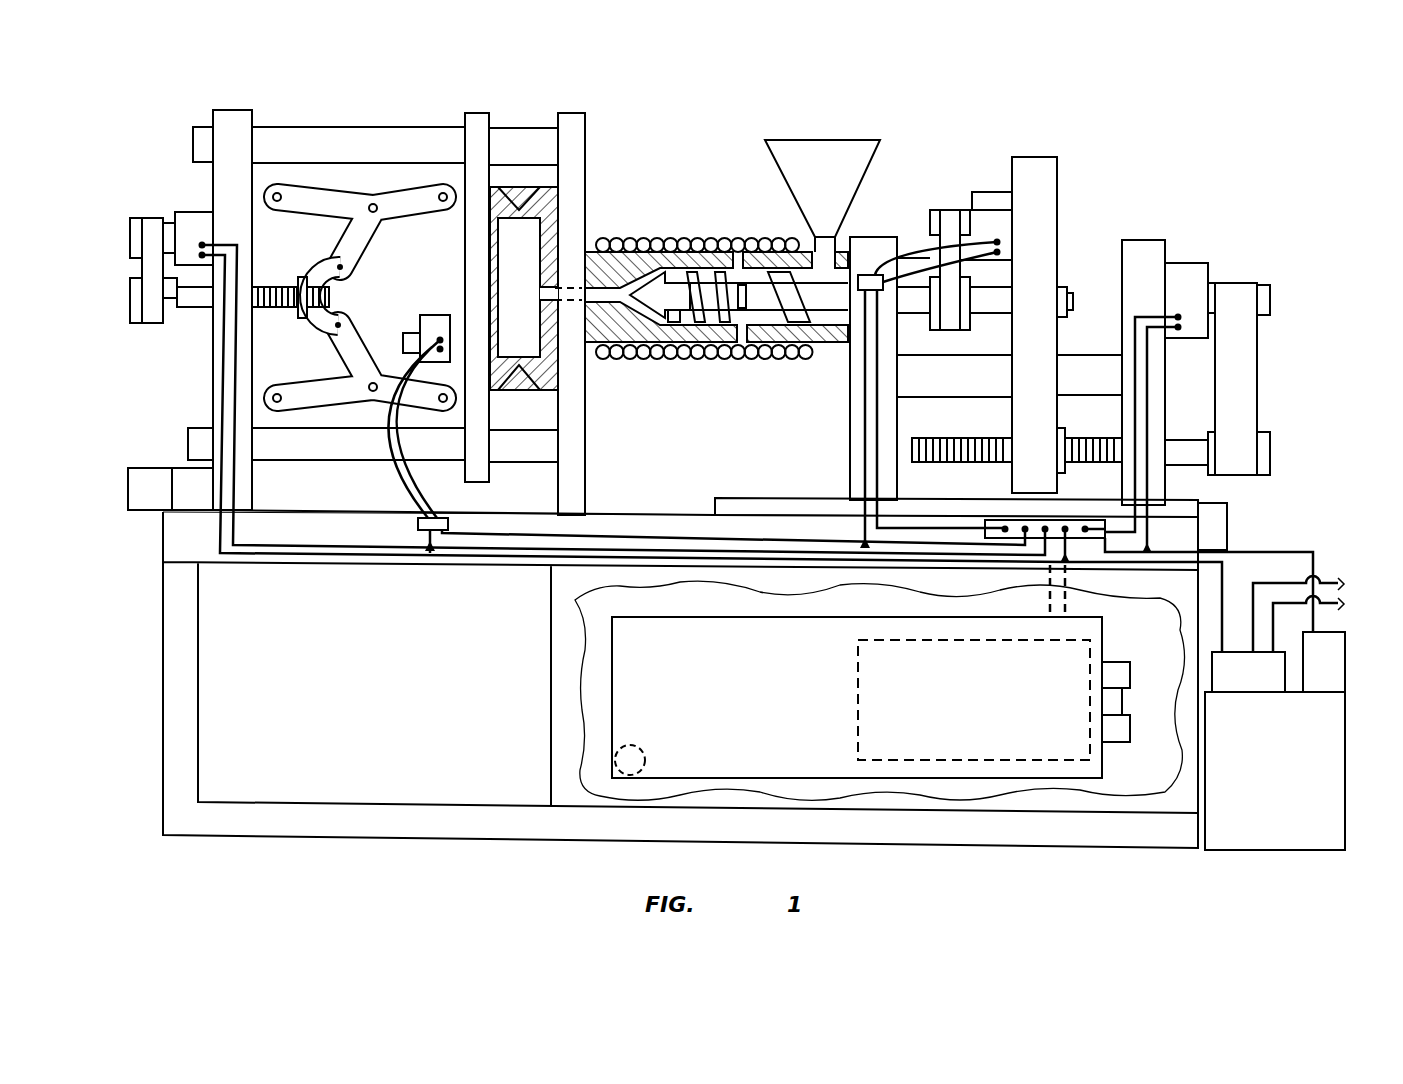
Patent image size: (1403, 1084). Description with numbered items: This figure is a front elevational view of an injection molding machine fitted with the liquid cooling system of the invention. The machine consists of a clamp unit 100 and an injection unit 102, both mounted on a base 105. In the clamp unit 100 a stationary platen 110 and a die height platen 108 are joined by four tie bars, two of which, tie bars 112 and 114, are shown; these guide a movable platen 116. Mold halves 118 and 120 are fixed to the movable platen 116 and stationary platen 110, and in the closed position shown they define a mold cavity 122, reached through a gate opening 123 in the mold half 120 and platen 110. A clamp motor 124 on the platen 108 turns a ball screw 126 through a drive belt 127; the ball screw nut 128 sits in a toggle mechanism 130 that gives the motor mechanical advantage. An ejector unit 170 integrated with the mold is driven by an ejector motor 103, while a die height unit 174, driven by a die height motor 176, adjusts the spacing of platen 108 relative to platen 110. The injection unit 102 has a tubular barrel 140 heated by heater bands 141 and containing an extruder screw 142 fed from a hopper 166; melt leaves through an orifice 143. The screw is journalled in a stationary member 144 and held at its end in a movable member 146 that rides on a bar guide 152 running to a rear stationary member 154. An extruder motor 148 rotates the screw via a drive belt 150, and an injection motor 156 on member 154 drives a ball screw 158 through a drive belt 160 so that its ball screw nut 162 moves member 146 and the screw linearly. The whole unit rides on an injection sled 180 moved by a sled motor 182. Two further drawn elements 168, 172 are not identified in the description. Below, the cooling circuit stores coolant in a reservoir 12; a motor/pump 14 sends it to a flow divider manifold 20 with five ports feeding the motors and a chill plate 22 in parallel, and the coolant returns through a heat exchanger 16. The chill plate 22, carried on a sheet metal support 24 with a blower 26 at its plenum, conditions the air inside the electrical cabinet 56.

The reservoir 12 is at (1310, 767).
The motor/pump 14 is at (1325, 665).
The heat exchanger 16 is at (1240, 668).
The flow divider manifold 20 is at (1053, 525).
The chill plate 22 is at (1068, 632).
The sheet metal support 24 is at (675, 670).
The blower 26 is at (1113, 730).
The electrical cabinet 56 is at (595, 711).
The clamp unit 100 is at (270, 107).
The injection unit 102 is at (1074, 201).
The ejector motor 103 is at (437, 313).
The base 105 is at (598, 516).
The die height platen 108 is at (240, 110).
The stationary platen 110 is at (573, 113).
The tie bar 112 is at (393, 127).
The tie bar 114 is at (305, 463).
The movable platen 116 is at (477, 110).
The mold half 118 is at (503, 187).
The mold half 120 is at (519, 245).
The mold cavity 122 is at (519, 337).
The gate opening 123 is at (552, 293).
The clamp motor 124 is at (195, 210).
The ball screw 126 is at (348, 260).
The drive belt 127 is at (138, 263).
The ball screw nut 128 is at (305, 323).
The toggle mechanism 130 is at (369, 264).
The tubular barrel 140 is at (833, 347).
The heater bands 141 is at (692, 253).
The extruder screw 142 is at (640, 328).
The orifice 143 is at (608, 293).
The stationary member 144 is at (845, 400).
The movable member 146 is at (1027, 157).
The extruder motor 148 is at (1002, 193).
The drive belt 150 is at (937, 242).
The bar guide 152 is at (987, 378).
The stationary member 154 is at (1165, 377).
The injection motor 156 is at (1182, 260).
The ball screw 158 is at (1172, 440).
The drive belt 160 is at (1260, 383).
The ball screw nut 162 is at (1058, 425).
The hopper 166 is at (788, 137).
The drive shaft end 168 is at (1073, 302).
The ejector unit 170 is at (457, 312).
The sensor bracket 172 is at (414, 332).
The die height unit 174 is at (163, 469).
The die height motor 176 is at (157, 513).
The injection sled 180 is at (737, 498).
The sled motor 182 is at (1230, 517).